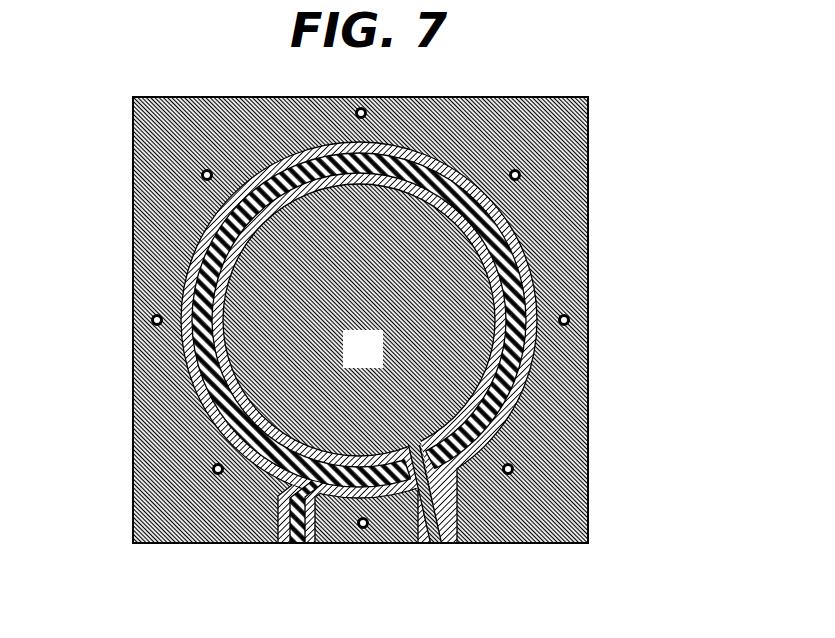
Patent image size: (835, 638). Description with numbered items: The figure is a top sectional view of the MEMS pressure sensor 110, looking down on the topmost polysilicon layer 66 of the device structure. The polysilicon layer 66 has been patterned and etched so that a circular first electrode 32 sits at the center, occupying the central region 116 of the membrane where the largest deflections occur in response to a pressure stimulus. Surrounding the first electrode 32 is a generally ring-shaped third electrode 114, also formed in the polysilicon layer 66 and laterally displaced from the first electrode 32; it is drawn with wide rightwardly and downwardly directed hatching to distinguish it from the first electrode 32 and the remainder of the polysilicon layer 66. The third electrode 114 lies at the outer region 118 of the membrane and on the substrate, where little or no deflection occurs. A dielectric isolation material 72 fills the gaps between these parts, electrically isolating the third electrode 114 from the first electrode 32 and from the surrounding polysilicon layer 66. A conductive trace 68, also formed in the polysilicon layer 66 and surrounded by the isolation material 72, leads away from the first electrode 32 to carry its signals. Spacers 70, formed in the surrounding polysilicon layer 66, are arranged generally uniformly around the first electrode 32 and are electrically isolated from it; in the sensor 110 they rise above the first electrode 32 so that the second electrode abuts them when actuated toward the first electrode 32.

The first electrode 32 is at (376, 366).
The polysilicon layer 66 is at (578, 434).
The conductive trace 68 is at (437, 540).
The spacers 70 is at (571, 319).
The dielectric isolation material 72 is at (475, 185).
The MEMS pressure sensor 110 is at (715, 550).
The third electrode 114 is at (495, 237).
The central region 116 is at (270, 238).
The outer region 118 is at (203, 264).